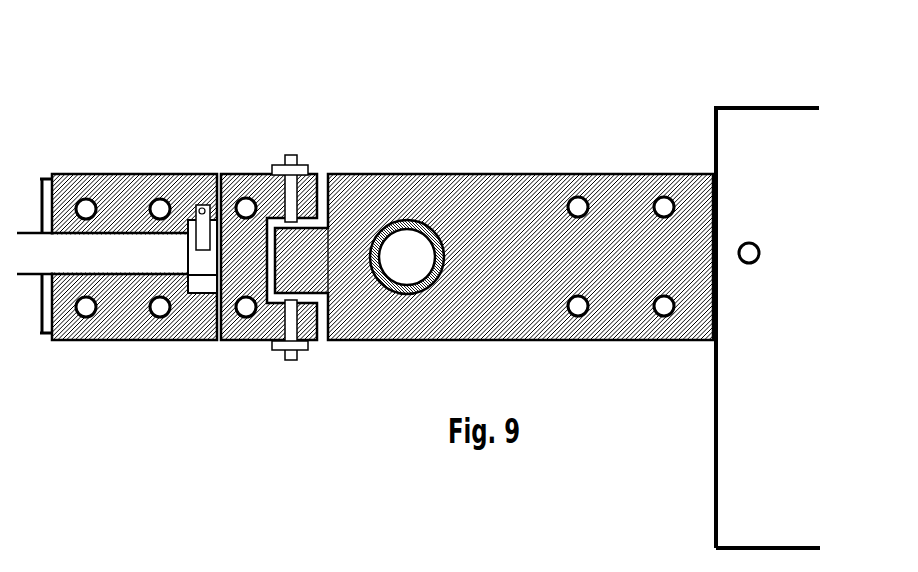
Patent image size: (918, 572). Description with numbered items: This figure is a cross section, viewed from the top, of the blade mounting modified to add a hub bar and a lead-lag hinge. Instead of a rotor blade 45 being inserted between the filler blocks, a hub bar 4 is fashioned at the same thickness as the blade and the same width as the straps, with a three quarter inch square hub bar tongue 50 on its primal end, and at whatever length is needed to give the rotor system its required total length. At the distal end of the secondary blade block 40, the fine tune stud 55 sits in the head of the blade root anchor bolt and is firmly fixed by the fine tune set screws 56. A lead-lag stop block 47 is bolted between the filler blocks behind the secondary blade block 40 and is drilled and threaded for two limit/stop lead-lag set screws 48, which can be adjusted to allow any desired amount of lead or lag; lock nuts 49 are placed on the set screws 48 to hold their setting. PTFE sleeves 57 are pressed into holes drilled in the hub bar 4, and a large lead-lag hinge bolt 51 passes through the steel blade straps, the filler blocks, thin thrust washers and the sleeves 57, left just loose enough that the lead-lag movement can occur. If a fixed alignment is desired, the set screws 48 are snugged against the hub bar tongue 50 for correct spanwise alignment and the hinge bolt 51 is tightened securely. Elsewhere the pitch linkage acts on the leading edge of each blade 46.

The hub bar 4 is at (354, 218).
The secondary blade block 40 is at (110, 208).
The rotor blade 45 is at (758, 135).
The leading edge of each blade 46 is at (716, 106).
The lead-lag stop block 47 is at (230, 264).
The limit/stop lead-lag set screws 48 is at (285, 151).
The lock nuts 49 is at (309, 161).
The hub bar tongue 50 is at (290, 264).
The large lead-lag hinge bolt 51 is at (406, 242).
The fine tune stud 55 is at (203, 232).
The fine tune set screws 56 is at (202, 209).
The PTFE sleeves 57 is at (432, 232).